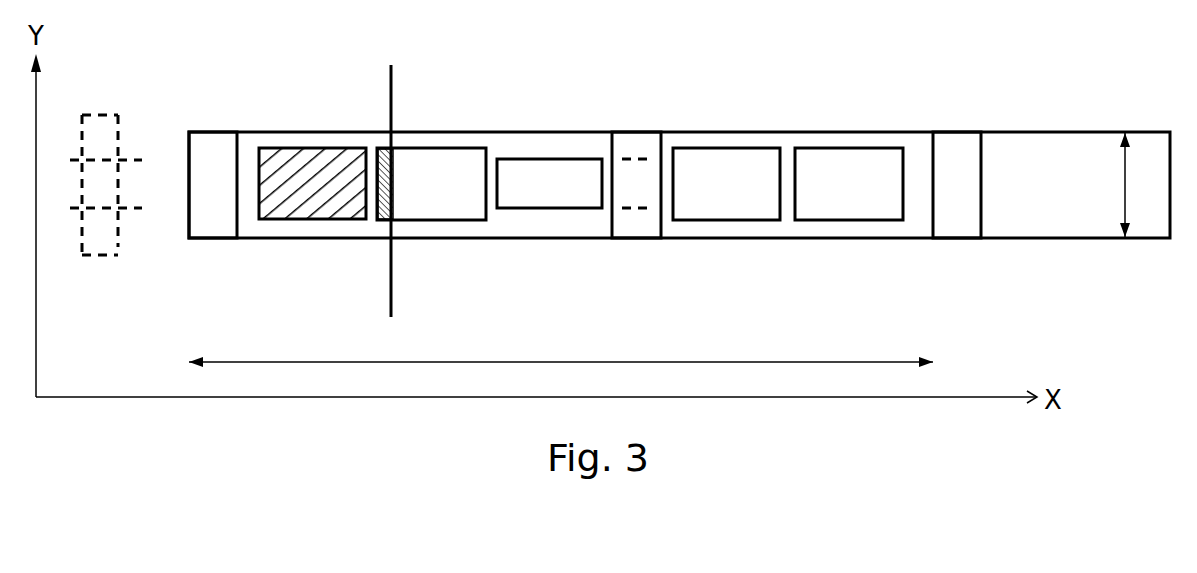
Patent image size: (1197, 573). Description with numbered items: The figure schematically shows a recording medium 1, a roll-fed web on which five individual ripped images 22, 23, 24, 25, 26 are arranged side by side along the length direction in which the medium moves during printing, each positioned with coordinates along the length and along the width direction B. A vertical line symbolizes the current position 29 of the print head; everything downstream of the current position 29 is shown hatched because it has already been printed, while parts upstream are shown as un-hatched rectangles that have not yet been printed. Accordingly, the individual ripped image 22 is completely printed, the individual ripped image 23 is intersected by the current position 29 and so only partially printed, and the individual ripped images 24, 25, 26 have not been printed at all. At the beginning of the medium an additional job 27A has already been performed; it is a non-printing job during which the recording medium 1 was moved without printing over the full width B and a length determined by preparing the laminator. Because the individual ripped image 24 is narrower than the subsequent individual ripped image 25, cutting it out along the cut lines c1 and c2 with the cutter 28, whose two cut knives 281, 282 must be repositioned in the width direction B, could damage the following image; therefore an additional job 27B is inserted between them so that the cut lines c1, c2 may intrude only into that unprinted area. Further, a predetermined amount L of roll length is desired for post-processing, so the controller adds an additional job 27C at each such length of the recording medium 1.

The recording medium 1 is at (1070, 152).
The individual ripped image 22 is at (308, 150).
The individual ripped image 23 is at (425, 153).
The individual ripped image 24 is at (533, 160).
The individual ripped image 25 is at (768, 148).
The individual ripped image 26 is at (845, 148).
The additional job 27A is at (200, 131).
The additional job 27B is at (652, 240).
The additional job 27C is at (957, 130).
The cutter 28 is at (95, 112).
The cut knife 281 is at (125, 160).
The cut knife 282 is at (125, 208).
The current position 29 is at (390, 297).
The cut line c1 is at (638, 212).
The cut line c2 is at (640, 152).
The predetermined amount of length L is at (792, 362).
The width direction B is at (1122, 183).